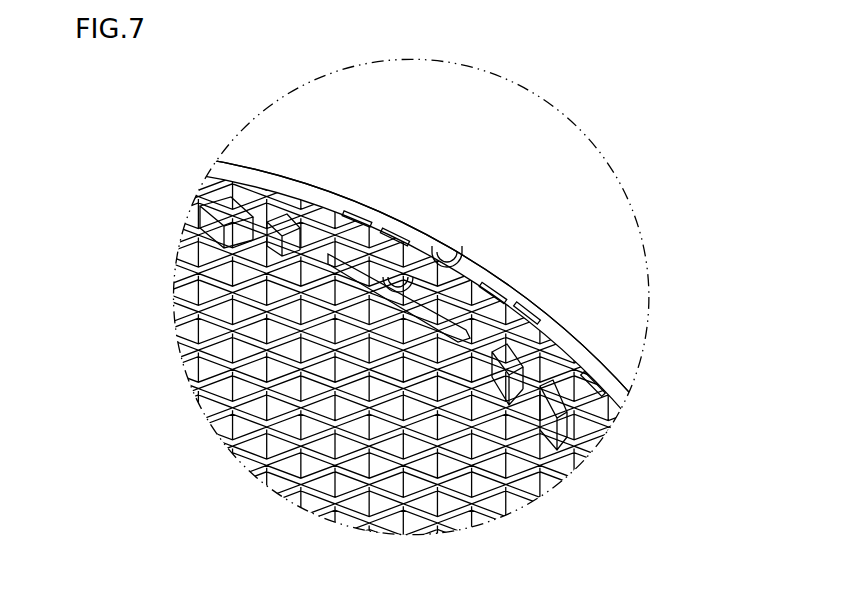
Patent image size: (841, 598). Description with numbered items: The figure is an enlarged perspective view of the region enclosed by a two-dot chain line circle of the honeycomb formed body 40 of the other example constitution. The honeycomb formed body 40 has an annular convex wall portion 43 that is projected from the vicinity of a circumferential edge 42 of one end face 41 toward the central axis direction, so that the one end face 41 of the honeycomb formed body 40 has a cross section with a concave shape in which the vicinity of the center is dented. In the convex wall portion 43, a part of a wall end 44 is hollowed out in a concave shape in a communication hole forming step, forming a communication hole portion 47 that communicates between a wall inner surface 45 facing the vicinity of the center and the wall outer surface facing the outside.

The honeycomb formed body 40 is at (506, 176).
The one end face 41 is at (173, 235).
The circumferential edge 42 is at (390, 148).
The convex wall portion 43 is at (425, 290).
The wall end 44 is at (515, 300).
The wall inner surface 45 is at (345, 224).
The communication hole portion 47 is at (441, 252).